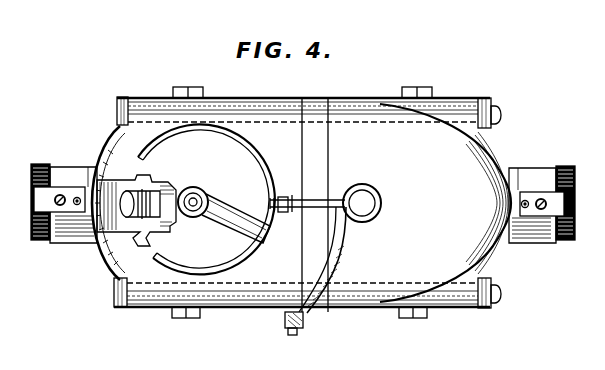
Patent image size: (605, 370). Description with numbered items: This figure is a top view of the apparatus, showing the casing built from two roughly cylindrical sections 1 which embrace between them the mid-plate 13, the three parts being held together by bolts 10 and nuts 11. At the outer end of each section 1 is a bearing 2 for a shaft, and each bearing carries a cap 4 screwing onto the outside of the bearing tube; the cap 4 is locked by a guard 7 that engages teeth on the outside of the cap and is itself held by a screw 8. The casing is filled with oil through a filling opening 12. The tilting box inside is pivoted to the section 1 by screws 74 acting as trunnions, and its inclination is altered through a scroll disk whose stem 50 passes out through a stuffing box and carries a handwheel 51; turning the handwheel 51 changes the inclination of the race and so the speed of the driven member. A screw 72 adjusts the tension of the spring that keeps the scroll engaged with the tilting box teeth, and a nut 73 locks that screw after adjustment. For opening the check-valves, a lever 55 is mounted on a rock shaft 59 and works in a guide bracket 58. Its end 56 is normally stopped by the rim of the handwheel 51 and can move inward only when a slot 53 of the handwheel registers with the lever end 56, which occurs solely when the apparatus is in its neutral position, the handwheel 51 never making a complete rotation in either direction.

The casing section 1 is at (301, 202).
The bearing 2 is at (303, 213).
The cap 4 is at (303, 196).
The guard 7 is at (299, 201).
The screw 8 is at (61, 196).
The bolt 10 is at (501, 115).
The nut 11 is at (490, 102).
The filling opening 12 is at (373, 200).
The mid-plate 13 is at (322, 154).
The stem 50 is at (193, 194).
The handwheel 51 is at (206, 199).
The slot 53 is at (240, 218).
The lever 55 is at (344, 240).
The lever end 56 is at (307, 196).
The guide bracket 58 is at (290, 197).
The rock shaft 59 is at (292, 330).
The screw 72 is at (132, 190).
The nut 73 is at (133, 216).
The screws 74 is at (302, 206).